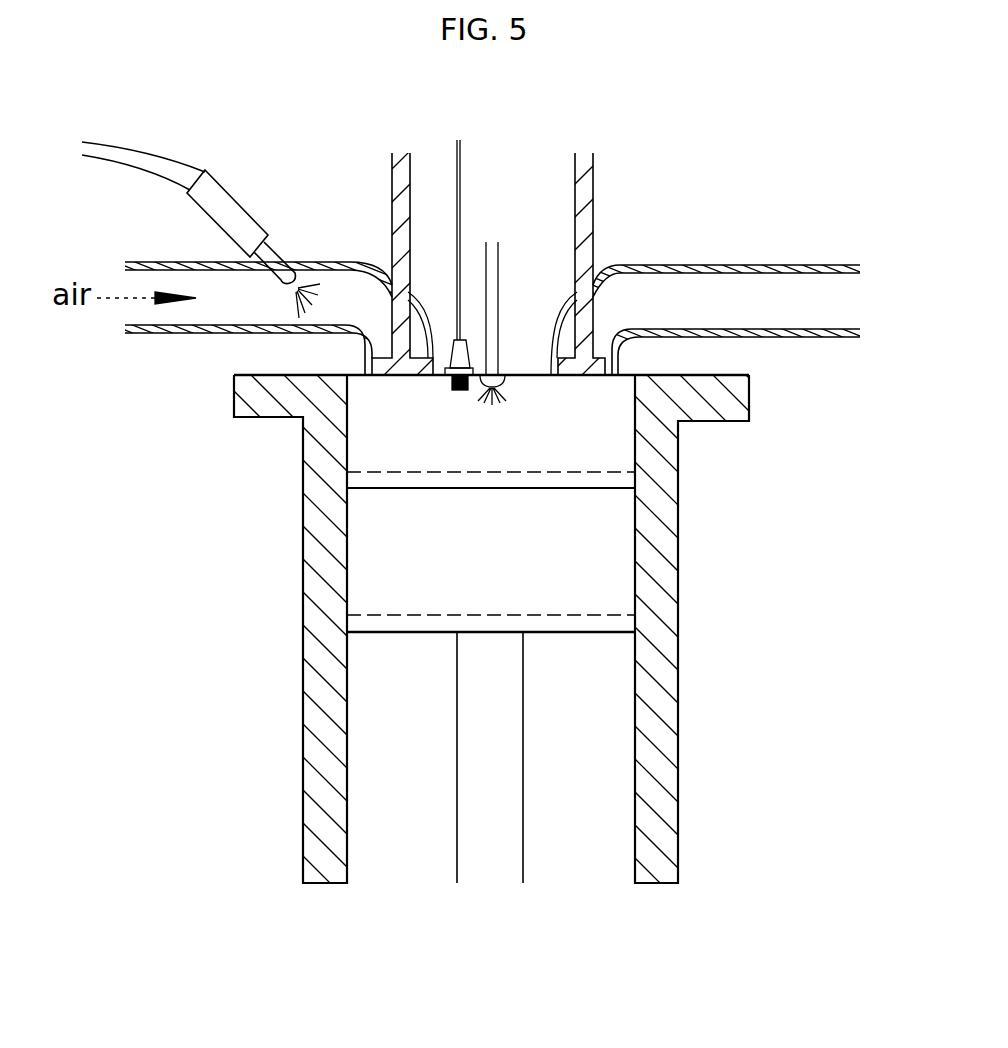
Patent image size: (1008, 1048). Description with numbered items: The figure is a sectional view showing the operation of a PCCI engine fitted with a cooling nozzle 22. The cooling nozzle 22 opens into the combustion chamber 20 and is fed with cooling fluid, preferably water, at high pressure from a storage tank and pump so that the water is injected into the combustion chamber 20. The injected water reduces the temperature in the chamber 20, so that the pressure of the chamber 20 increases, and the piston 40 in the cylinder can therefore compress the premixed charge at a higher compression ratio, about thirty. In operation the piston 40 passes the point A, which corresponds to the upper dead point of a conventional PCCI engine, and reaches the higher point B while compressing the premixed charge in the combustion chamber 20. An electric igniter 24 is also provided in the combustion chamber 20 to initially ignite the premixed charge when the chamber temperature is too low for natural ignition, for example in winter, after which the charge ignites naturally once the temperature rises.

The combustion chamber 20 is at (585, 427).
The cooling nozzle 22 is at (506, 383).
The electric igniter 24 is at (447, 392).
The piston 40 is at (572, 572).
The point A is at (563, 615).
The point B is at (563, 473).